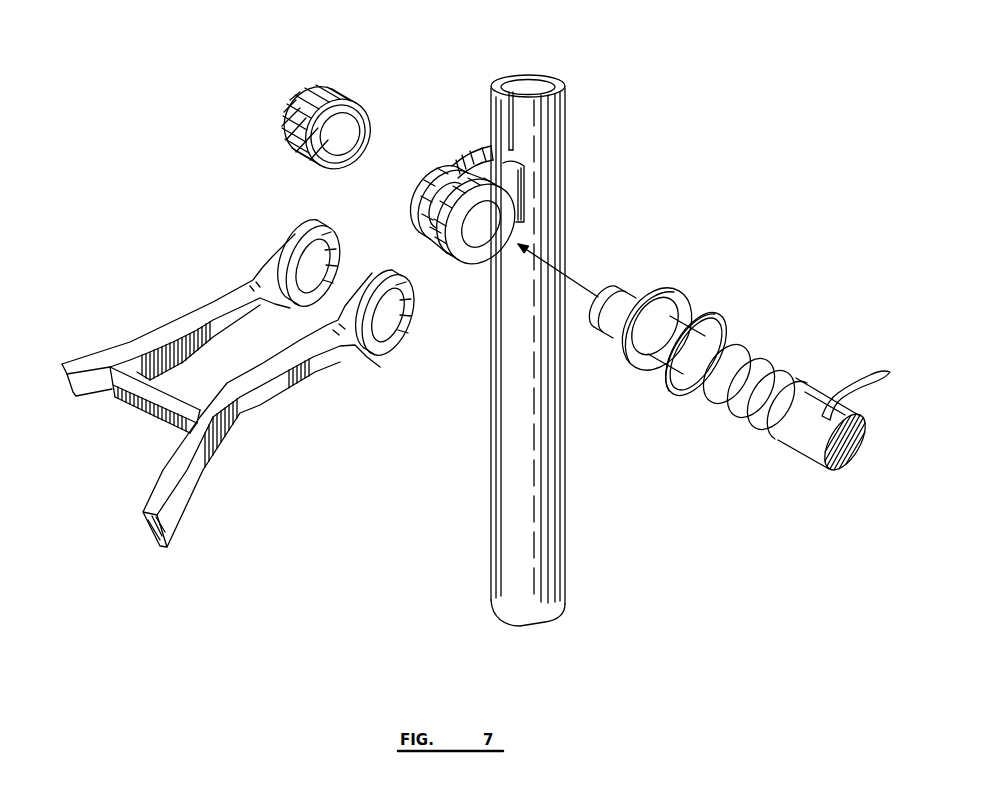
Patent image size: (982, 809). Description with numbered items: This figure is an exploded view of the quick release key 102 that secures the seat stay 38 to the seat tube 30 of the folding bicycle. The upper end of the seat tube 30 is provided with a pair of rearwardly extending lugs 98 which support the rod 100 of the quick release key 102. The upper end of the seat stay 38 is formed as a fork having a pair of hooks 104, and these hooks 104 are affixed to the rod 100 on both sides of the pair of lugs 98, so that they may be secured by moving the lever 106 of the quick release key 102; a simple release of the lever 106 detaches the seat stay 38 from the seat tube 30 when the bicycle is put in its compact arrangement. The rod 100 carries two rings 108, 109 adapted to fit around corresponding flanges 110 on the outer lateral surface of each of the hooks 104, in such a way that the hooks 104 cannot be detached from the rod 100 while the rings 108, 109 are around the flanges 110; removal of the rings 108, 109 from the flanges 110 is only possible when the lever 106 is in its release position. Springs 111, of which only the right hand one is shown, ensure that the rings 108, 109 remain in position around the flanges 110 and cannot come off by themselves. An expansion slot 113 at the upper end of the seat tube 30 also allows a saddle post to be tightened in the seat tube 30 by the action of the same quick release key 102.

The seat tube 30 is at (541, 553).
The seat stay 38 is at (153, 420).
The lugs 98 is at (453, 184).
The rod 100 is at (690, 362).
The quick release key 102 is at (747, 435).
The hooks 104 is at (280, 236).
The lever 106 is at (857, 380).
The ring 108 is at (673, 288).
The ring 109 is at (720, 323).
The flanges 110 is at (318, 254).
The springs 111 is at (723, 405).
The expansion slot 113 is at (515, 98).